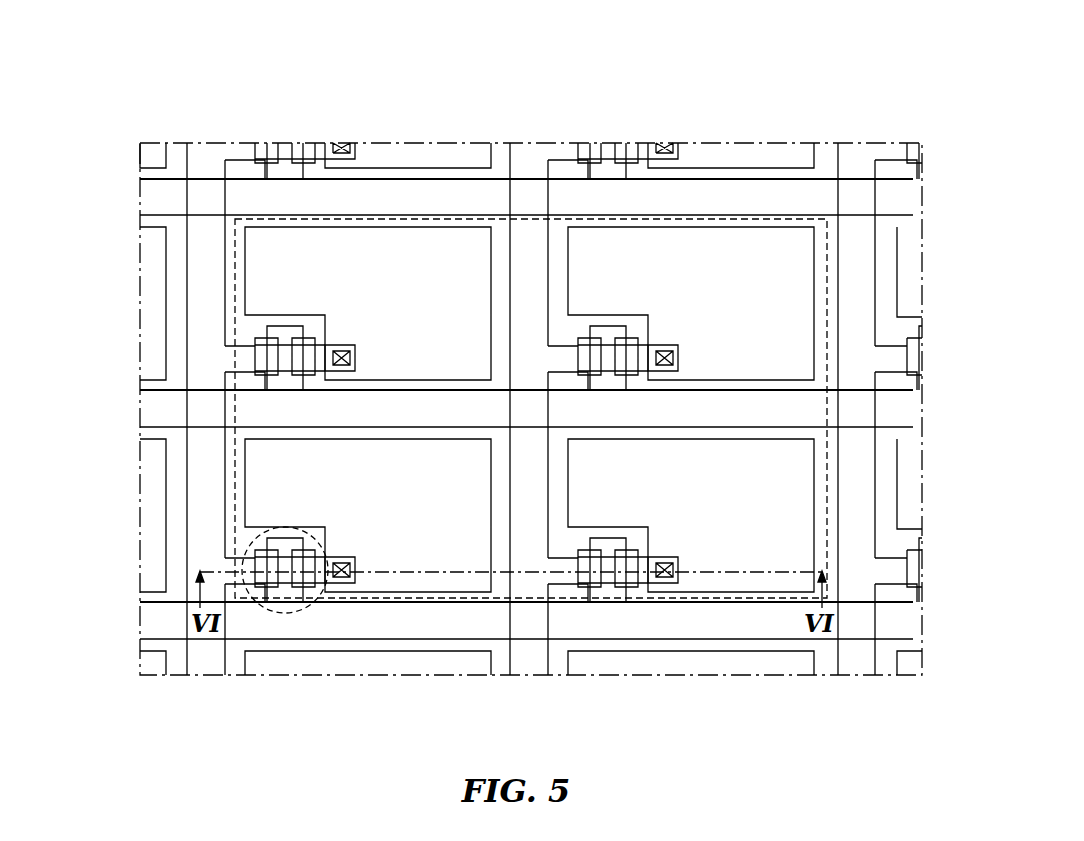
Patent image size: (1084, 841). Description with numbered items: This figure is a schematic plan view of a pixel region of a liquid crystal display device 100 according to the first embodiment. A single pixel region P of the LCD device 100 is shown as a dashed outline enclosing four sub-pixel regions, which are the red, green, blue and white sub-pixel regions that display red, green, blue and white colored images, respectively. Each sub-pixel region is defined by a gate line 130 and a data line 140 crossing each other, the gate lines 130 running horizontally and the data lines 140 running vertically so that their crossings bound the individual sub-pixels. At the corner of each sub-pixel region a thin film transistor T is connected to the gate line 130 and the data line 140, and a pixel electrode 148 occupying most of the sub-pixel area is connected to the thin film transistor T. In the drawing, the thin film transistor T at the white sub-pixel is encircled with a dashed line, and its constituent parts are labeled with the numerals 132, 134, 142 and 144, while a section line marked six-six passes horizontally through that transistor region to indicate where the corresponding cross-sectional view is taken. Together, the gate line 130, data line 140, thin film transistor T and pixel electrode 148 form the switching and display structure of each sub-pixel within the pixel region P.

The liquid crystal display device 100 is at (603, 108).
The gate line 130 is at (690, 630).
The gate electrode 132 is at (284, 548).
The semiconductor layer 134 is at (283, 592).
The data line 140 is at (197, 278).
The source electrode 142 is at (252, 589).
The drain electrode 144 is at (328, 590).
The pixel electrode 148 is at (457, 593).
The pixel region P is at (828, 297).
The thin film transistor T is at (322, 551).